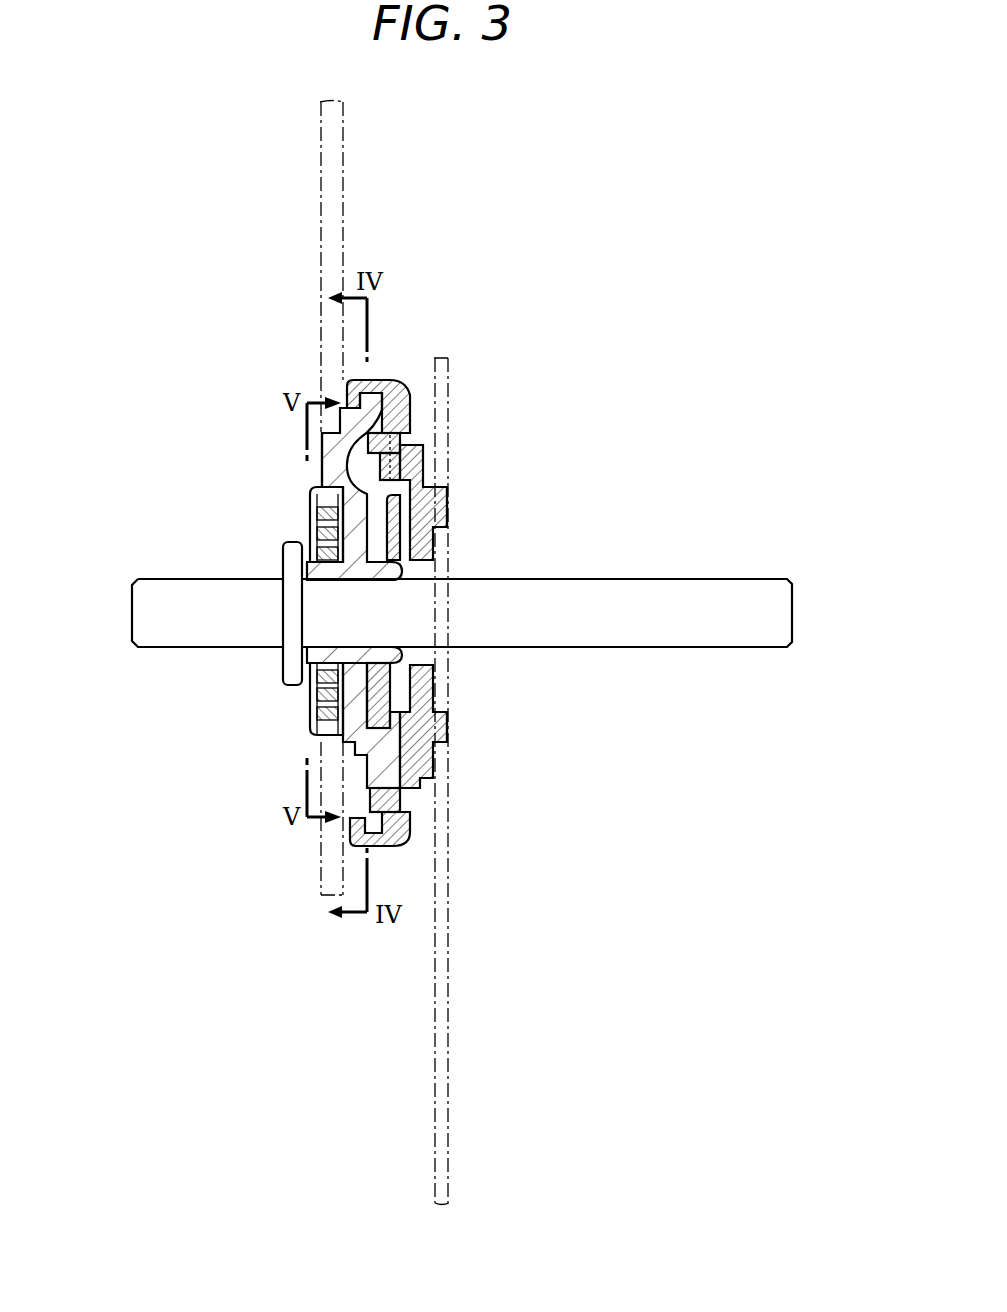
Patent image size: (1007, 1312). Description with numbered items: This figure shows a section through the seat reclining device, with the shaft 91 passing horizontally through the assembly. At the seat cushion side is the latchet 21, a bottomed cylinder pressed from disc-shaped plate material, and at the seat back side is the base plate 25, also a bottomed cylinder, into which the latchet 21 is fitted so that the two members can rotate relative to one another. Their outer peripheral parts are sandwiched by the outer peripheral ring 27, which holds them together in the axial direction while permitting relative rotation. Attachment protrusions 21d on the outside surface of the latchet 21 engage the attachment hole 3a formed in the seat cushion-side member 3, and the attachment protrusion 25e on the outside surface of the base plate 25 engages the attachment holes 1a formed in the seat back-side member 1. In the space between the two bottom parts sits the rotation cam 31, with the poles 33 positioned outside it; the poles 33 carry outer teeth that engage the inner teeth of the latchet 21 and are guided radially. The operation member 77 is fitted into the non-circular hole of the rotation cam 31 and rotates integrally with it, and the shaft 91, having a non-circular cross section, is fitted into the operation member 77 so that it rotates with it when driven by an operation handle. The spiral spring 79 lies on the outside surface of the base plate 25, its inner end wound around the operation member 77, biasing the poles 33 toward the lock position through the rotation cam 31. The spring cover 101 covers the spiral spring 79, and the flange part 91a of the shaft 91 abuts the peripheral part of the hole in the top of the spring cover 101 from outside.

The seat back-side member 1 is at (343, 186).
The attachment holes 1a is at (319, 396).
The seat cushion-side member 3 is at (450, 905).
The attachment hole 3a is at (446, 742).
The latchet 21 is at (425, 470).
The attachment protrusions 21d is at (445, 506).
The base plate 25 is at (350, 530).
The attachment protrusion 25e is at (323, 476).
The outer peripheral ring 27 is at (406, 396).
The rotation cam 31 is at (382, 690).
The poles 33 is at (393, 448).
The operation member 77 is at (428, 746).
The spiral spring 79 is at (313, 712).
The shaft 91 is at (606, 596).
The flange part 91a is at (292, 670).
The spring cover 101 is at (314, 522).